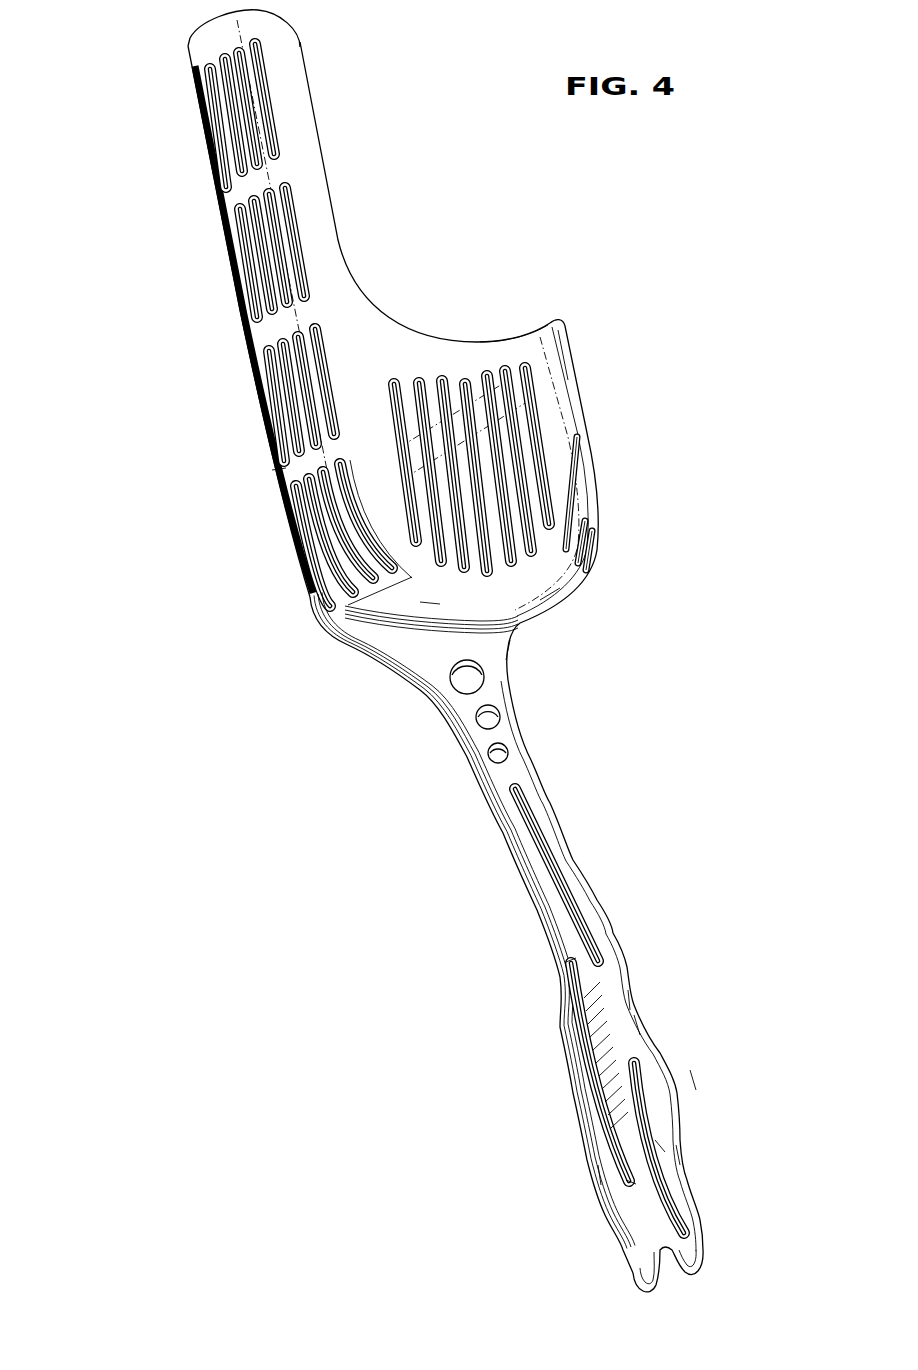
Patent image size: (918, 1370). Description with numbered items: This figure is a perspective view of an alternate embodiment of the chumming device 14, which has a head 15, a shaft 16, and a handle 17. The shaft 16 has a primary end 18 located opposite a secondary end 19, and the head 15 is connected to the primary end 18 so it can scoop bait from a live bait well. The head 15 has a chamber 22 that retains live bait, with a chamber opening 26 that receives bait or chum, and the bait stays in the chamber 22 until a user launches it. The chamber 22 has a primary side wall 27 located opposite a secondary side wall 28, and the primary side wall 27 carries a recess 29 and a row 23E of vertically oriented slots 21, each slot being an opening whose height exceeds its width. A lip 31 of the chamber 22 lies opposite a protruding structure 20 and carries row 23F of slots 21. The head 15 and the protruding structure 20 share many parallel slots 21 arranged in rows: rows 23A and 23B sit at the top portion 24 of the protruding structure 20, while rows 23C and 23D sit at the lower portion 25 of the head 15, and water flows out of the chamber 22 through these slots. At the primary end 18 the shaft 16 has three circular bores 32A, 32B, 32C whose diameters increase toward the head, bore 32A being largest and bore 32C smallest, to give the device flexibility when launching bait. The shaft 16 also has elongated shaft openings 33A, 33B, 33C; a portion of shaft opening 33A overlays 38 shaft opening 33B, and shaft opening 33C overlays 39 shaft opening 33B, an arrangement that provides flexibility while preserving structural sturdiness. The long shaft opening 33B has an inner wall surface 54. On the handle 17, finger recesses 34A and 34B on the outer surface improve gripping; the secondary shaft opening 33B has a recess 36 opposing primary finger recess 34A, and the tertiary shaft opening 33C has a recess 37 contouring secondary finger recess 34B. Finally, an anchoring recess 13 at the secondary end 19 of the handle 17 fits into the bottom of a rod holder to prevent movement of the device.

The anchoring recess 13 is at (657, 1250).
The chumming device 14 is at (133, 37).
The head 15 is at (277, 462).
The shaft 16 is at (580, 865).
The handle 17 is at (695, 1038).
The primary end 18 is at (507, 653).
The secondary end 19 is at (600, 1173).
The protruding structure 20 is at (305, 180).
The vertically oriented slots 21 is at (268, 118).
The chamber 22 is at (603, 527).
The row of vertically oriented slots 23A is at (222, 118).
The row of vertically oriented slots 23B is at (250, 253).
The row of vertically oriented slots 23C is at (278, 393).
The row of vertically oriented slots 23D is at (307, 540).
The row of vertically oriented slots 23E is at (493, 557).
The row of vertically oriented slots 23F is at (603, 498).
The top portion 24 is at (228, 38).
The lower portion 25 is at (423, 602).
The chamber opening 26 is at (474, 368).
The primary side wall 27 is at (467, 372).
The secondary side wall 28 is at (455, 370).
The recess 29 is at (515, 338).
The lip 31 is at (563, 348).
The bore 32A is at (462, 680).
The bore 32B is at (477, 717).
The bore 32C is at (490, 755).
The shaft opening 33A is at (588, 943).
The secondary shaft opening 33B is at (588, 1003).
The tertiary shaft opening 33C is at (642, 1100).
The primary finger recess 34A is at (633, 1027).
The secondary finger recess 34B is at (677, 1155).
The recess 36 is at (628, 1000).
The recess 37 is at (660, 1147).
The overlay 38 is at (580, 962).
The overlay 39 is at (643, 1173).
The inner wall surface 54 is at (600, 1043).